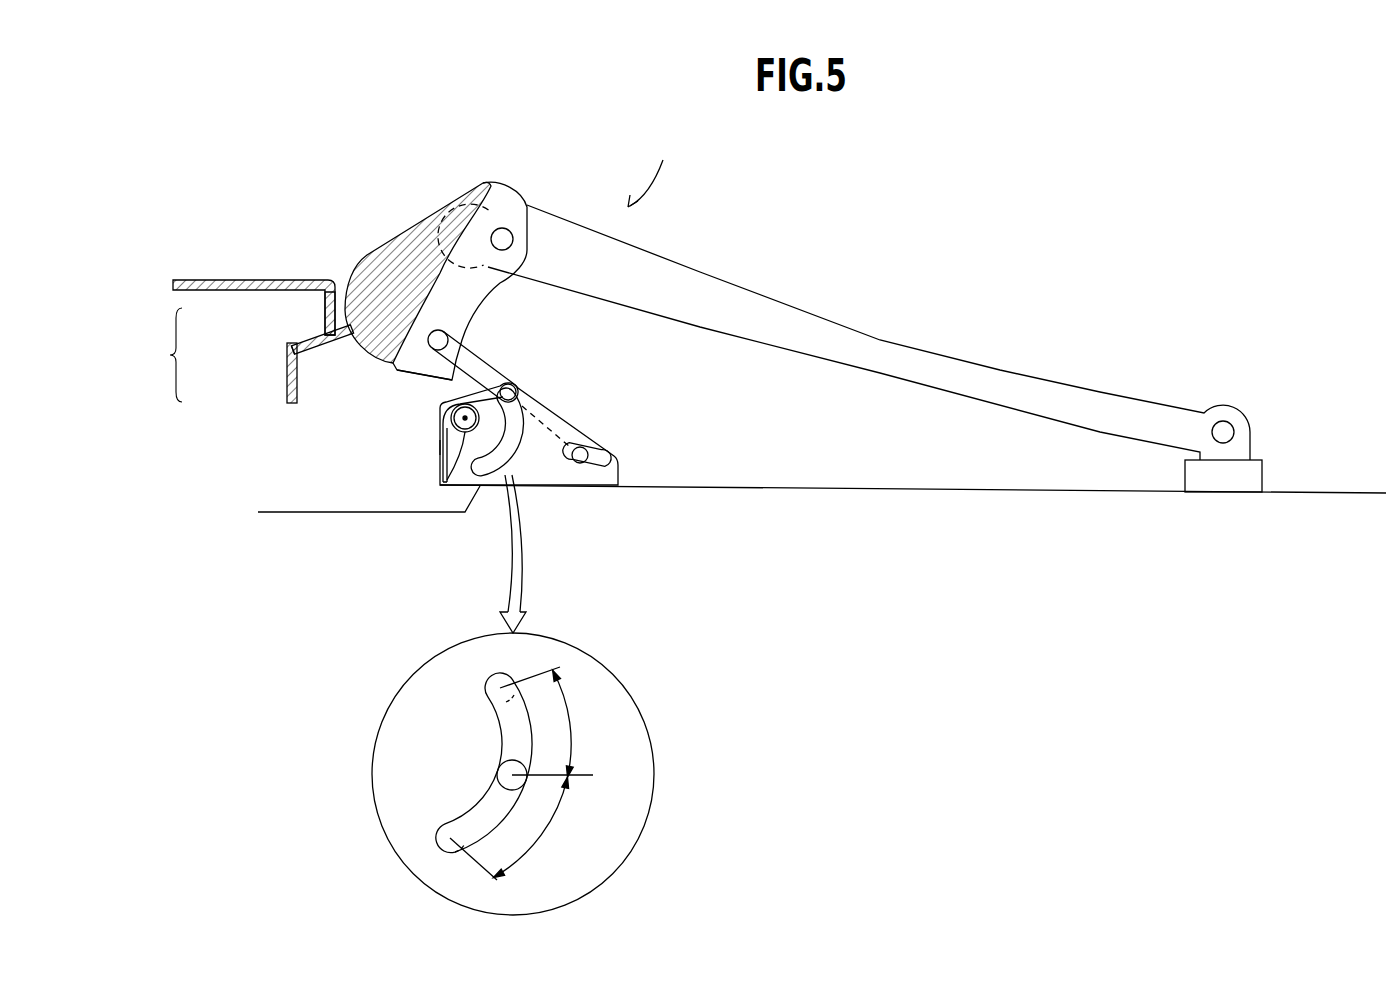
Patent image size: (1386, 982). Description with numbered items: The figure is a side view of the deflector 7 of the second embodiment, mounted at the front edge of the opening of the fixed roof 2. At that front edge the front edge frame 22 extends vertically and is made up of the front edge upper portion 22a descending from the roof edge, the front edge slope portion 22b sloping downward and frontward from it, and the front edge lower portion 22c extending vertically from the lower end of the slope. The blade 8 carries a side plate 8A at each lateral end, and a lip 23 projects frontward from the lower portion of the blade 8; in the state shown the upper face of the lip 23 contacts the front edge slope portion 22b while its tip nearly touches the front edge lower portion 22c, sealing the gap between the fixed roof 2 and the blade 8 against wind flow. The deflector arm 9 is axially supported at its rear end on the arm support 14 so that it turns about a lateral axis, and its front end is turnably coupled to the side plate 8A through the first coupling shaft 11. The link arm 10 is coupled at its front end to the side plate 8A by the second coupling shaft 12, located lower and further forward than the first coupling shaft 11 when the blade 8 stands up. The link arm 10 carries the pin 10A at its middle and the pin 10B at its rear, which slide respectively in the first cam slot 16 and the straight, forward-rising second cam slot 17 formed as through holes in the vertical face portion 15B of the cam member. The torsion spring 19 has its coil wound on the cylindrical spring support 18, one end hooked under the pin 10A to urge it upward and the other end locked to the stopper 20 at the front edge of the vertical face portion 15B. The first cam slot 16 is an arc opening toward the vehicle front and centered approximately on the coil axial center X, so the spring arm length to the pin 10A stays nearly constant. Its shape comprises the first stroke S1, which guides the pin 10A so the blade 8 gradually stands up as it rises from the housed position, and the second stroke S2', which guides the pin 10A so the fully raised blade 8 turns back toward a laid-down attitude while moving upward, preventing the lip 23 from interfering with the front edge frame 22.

The fixed roof 2 is at (245, 280).
The front edge frame 22 is at (158, 355).
The front edge upper portion 22a is at (322, 302).
The front edge slope portion 22b is at (293, 331).
The front edge lower portion 22c is at (286, 373).
The lip 23 is at (320, 353).
The blade 8 is at (422, 235).
The side plate 8A is at (448, 273).
The first coupling shaft 11 is at (505, 228).
The second coupling shaft 12 is at (410, 377).
The deflector arm 9 is at (783, 305).
The deflector 7 is at (650, 170).
The arm support 14 is at (1263, 466).
The link arm 10 is at (493, 360).
The pin 10A is at (530, 383).
The pin 10B is at (580, 450).
The vertical face portion 15B is at (587, 480).
The second cam slot 17 is at (613, 457).
The first cam slot 16 is at (520, 453).
The coil axial center X is at (451, 418).
The spring support 18 is at (447, 460).
The stopper 20 is at (442, 447).
The torsion spring 19 is at (446, 488).
The first stroke S1 is at (518, 828).
The second stroke S2' is at (560, 722).